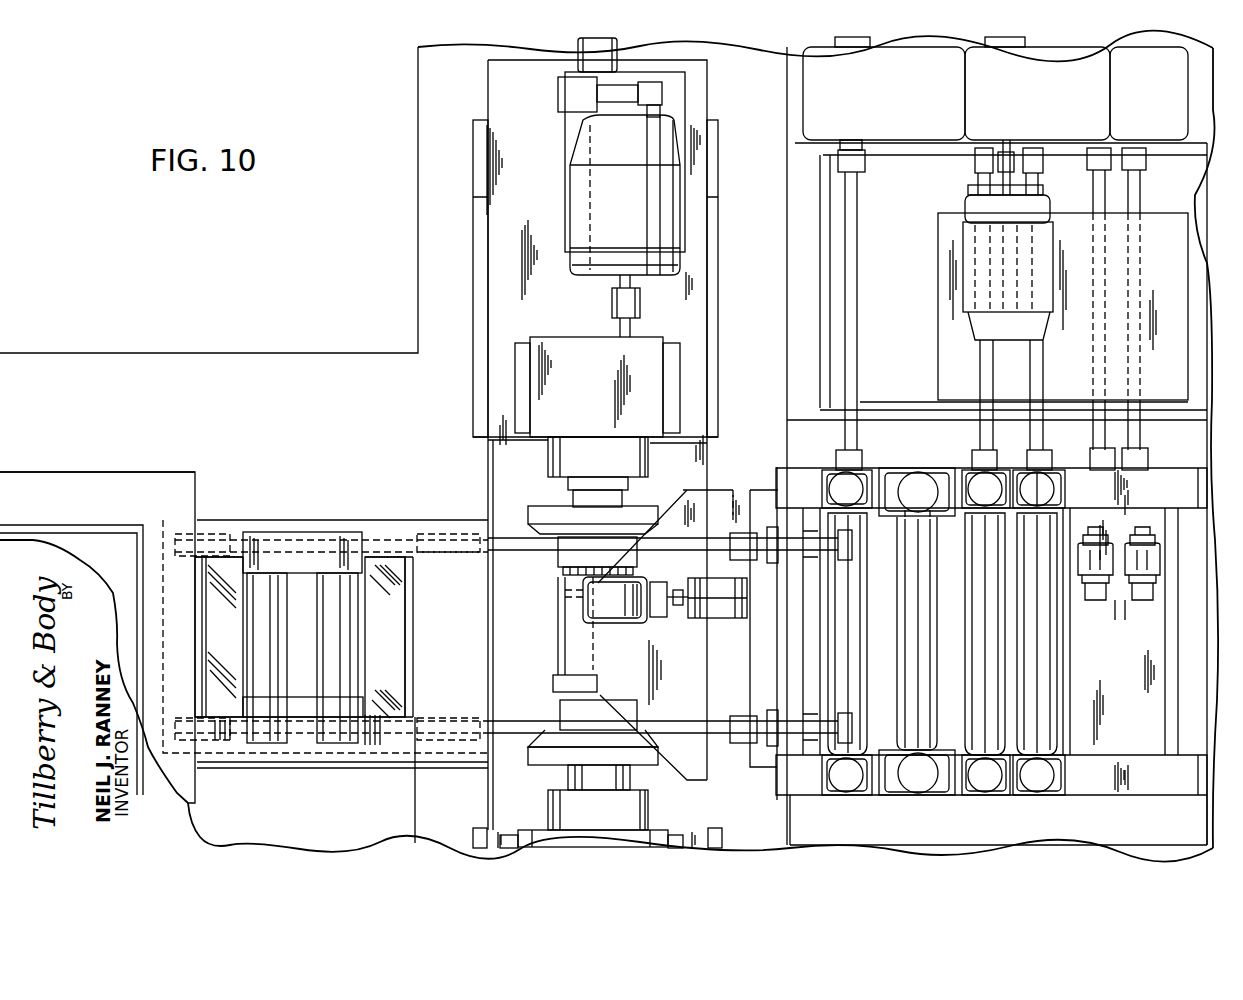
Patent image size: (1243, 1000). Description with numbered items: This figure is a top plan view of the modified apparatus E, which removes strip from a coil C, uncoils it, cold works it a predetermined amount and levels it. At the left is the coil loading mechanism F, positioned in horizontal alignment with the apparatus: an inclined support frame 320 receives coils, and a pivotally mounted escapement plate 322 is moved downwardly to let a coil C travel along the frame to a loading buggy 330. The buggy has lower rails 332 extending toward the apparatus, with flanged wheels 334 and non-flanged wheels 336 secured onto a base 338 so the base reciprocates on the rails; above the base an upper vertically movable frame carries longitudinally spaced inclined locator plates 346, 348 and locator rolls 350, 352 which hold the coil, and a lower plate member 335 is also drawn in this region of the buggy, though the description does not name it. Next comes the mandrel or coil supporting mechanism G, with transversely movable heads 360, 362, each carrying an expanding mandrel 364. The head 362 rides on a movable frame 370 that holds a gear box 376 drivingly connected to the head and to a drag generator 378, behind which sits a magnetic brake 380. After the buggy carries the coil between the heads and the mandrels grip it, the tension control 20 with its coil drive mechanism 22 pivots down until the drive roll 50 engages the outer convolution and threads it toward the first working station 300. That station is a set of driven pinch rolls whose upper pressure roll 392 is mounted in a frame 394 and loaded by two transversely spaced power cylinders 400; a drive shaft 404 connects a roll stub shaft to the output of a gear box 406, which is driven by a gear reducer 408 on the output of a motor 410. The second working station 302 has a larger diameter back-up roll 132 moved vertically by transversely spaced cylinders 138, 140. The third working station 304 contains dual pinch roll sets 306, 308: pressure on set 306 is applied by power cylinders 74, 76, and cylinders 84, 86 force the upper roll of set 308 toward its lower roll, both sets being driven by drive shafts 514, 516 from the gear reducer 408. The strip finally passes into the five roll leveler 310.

The tension control 20 is at (673, 630).
The coil drive mechanism 22 is at (627, 620).
The drive roll 50 is at (560, 637).
The power cylinder 74 is at (983, 783).
The power cylinder 76 is at (985, 475).
The cylinder 84 is at (1040, 783).
The cylinder 86 is at (1047, 487).
The larger diameter roll 132 is at (926, 591).
The cylinder 138 is at (913, 500).
The cylinder 140 is at (915, 785).
The first working station 300 is at (867, 460).
The second working station 302 is at (932, 463).
The third working station 304 is at (1013, 453).
The pinch roll set 306 is at (1001, 606).
The pinch roll set 308 is at (1052, 666).
The five roll leveler 310 is at (1168, 440).
The inclined support frame 320 is at (110, 525).
The escapement plate 322 is at (97, 547).
The loading buggy 330 is at (382, 497).
The lower rails 332 is at (500, 540).
The flanged wheels 334 is at (432, 537).
The plate 335 is at (305, 703).
The non-flanged wheels 336 is at (438, 735).
The base 338 is at (232, 522).
The inclined locator plate 346 is at (238, 627).
The inclined locator plate 348 is at (398, 630).
The locator roll 350 is at (288, 610).
The locator roll 352 is at (352, 652).
The head 360 is at (565, 713).
The head 362 is at (543, 513).
The expanding mandrel 364 is at (558, 563).
The movable frame 370 is at (703, 302).
The gear box 376 is at (585, 355).
The drag generator 378 is at (672, 195).
The magnetic brake 380 is at (657, 97).
The upper pressure roll 392 is at (862, 629).
The frame 394 is at (823, 467).
The power cylinder 400 is at (833, 491).
The drive shaft 404 is at (852, 333).
The gear box 406 is at (897, 128).
The gear reducer 408 is at (990, 110).
The motor 410 is at (970, 267).
The drive shaft 514 is at (977, 180).
The drive shaft 516 is at (1043, 177).
The coil C is at (475, 635).
The apparatus E is at (1192, 195).
The coil loading mechanism F is at (318, 493).
The mandrel or coil supporting mechanism G is at (687, 473).